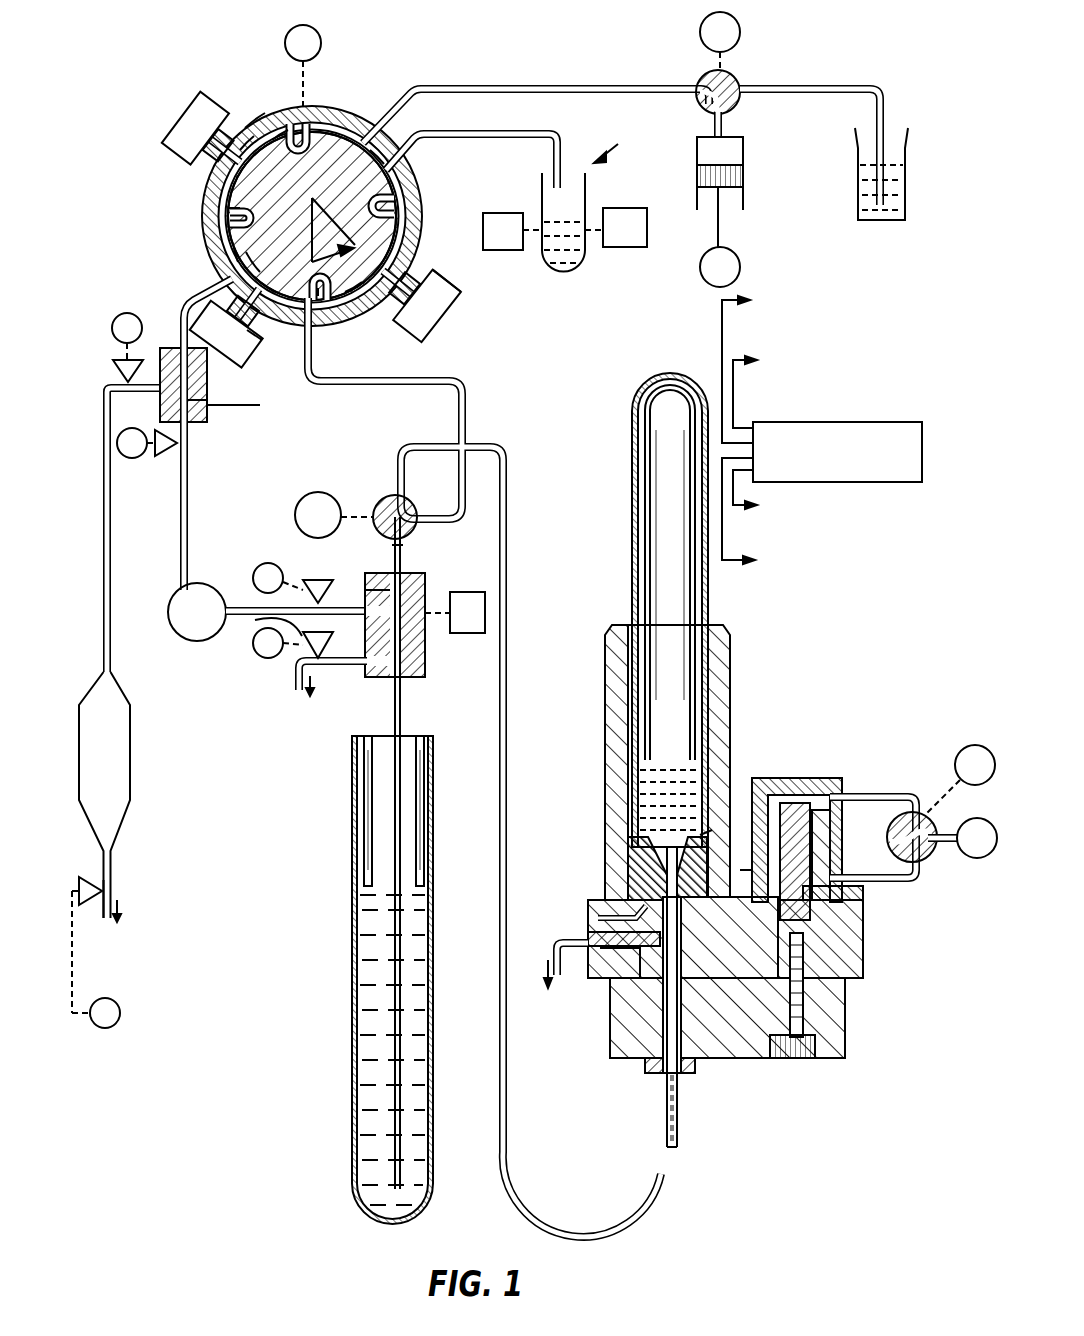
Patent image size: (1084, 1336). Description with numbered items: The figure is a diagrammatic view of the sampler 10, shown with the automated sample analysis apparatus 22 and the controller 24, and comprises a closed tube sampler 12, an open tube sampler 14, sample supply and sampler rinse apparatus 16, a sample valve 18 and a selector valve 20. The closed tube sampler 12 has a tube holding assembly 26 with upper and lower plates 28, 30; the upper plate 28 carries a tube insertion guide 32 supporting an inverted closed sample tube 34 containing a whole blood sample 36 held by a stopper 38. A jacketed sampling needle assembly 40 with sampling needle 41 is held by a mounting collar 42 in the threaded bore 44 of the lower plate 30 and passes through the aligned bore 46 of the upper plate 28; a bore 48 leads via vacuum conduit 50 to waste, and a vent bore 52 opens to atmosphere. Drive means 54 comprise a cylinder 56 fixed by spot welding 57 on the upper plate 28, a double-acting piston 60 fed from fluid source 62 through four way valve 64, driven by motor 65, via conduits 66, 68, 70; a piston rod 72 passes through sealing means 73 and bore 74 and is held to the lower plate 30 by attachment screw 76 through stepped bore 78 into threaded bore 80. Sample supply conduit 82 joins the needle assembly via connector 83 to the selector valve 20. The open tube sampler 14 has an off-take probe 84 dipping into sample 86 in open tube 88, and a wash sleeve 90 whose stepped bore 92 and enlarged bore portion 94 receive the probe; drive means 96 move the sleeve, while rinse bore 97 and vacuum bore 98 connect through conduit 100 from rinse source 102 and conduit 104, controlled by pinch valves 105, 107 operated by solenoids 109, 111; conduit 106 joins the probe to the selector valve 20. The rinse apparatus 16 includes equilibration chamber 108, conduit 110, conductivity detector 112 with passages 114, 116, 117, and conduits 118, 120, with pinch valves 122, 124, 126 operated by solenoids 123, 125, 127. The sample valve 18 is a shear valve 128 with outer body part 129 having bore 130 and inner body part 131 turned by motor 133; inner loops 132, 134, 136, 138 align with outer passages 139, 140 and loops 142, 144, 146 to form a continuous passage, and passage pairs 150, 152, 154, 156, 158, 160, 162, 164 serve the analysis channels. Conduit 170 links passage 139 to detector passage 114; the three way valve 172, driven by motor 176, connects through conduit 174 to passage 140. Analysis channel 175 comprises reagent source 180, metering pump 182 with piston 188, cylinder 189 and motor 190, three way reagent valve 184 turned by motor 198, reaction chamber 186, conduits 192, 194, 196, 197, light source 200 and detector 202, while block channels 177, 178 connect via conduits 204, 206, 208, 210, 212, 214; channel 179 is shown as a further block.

The sampler 10 is at (298, 980).
The closed tube sampler 12 is at (657, 636).
The open tube sampler 14 is at (330, 832).
The sample supply and sampler rinse apparatus 16 is at (194, 474).
The sample valve 18 is at (418, 197).
The selector valve 20 is at (421, 486).
The automated sample analysis apparatus 22 is at (590, 231).
The controller 24 is at (922, 436).
The closed sample tube holding assembly 26 is at (721, 997).
The upper plate 28 is at (864, 924).
The lower plate 30 is at (846, 1050).
The sample tube insertion guide 32 is at (731, 672).
The closed sample tube 34 is at (710, 608).
The whole blood sample 36 is at (668, 760).
The stopper 38 is at (632, 870).
The jacketed sampling needle assembly 40 is at (660, 995).
The sampling needle 41 is at (704, 832).
The screw-threaded mounting collar 42 is at (676, 1070).
The stepped and internally threaded bore 44 is at (690, 1060).
The aligned bore 46 is at (590, 928).
The bore 48 is at (606, 952).
The vacuum conduit 50 is at (556, 950).
The vent bore 52 is at (596, 912).
The closed tube holding assembly drive means 54 is at (776, 778).
The cylinder 56 is at (805, 818).
The spot welding 57 is at (745, 880).
The double-acting piston 60 is at (800, 806).
The pressurized fluid source 62 is at (972, 855).
The four way valve 64 is at (900, 809).
The electric drive motor 65 is at (968, 746).
The conduit 66 is at (942, 830).
The conduit 68 is at (892, 796).
The conduit 70 is at (898, 852).
The piston rod 72 is at (832, 826).
The sealing means 73 is at (830, 893).
The bore 74 is at (866, 905).
The attachment screw 76 is at (804, 1016).
The stepped bore 78 is at (810, 1060).
The threaded bore 80 is at (804, 936).
The flexible sample supply conduit 82 is at (475, 767).
The sampling needle connector 83 is at (666, 1092).
The off-take probe 84 is at (402, 712).
The sample 86 is at (362, 886).
The open sample tube 88 is at (360, 980).
The probe wash sleeve 90 is at (412, 578).
The stepped bore 92 is at (388, 590).
The enlarged bore portion 94 is at (420, 640).
The wash sleeve drive means 96 is at (470, 592).
The rinse solution bore 97 is at (372, 595).
The vacuum bore 98 is at (372, 670).
The flexible rinse conduit 100 is at (232, 604).
The pressurized rinse solution source 102 is at (194, 642).
The flexible vacuum conduit 104 is at (334, 648).
The pinch valve 105 is at (304, 576).
The flexible sample supply conduit 106 is at (402, 545).
The pinch valve 107 is at (264, 623).
The pressure equilibration chamber 108 is at (132, 750).
The solenoid 109 is at (268, 562).
The flexible conduit 110 is at (112, 880).
The solenoid 111 is at (264, 656).
The conductivity detector 112 is at (262, 408).
The flow passage 114 is at (196, 380).
The flow passage 116 is at (162, 400).
The flow passage 117 is at (200, 412).
The flexible conduit 118 is at (110, 530).
The flexible conduit 120 is at (190, 532).
The pinch valve 122 is at (84, 880).
The solenoid 123 is at (120, 1012).
The pinch valve 124 is at (112, 366).
The solenoid 125 is at (118, 312).
The pinch valve 126 is at (162, 458).
The solenoid 127 is at (131, 458).
The shear valve 128 is at (318, 100).
The outer valve body part 129 is at (402, 218).
The bore 130 is at (236, 226).
The inner valve body part 131 is at (304, 372).
The sample fluid loop 132 is at (228, 210).
The electric drive motor 133 is at (318, 36).
The sample fluid loop 134 is at (300, 122).
The sample fluid loop 136 is at (392, 206).
The sample fluid loop 138 is at (324, 304).
The sample fluid passage 139 is at (246, 258).
The sample fluid passage 140 is at (319, 306).
The sample fluid loop 142 is at (280, 134).
The sample fluid loop 144 is at (404, 136).
The sample fluid loop 146 is at (392, 238).
The fluid passage 150 is at (252, 306).
The fluid passage 152 is at (290, 240).
The fluid passage 154 is at (226, 166).
The fluid passage 156 is at (256, 118).
The fluid passage 158 is at (395, 100).
The fluid passage 160 is at (386, 158).
The fluid passage 162 is at (403, 284).
The fluid passage 164 is at (352, 296).
The flexible conduit 170 is at (236, 266).
The three way valve 172 is at (410, 494).
The flexible conduit 174 is at (452, 380).
The sample analysis channel 175 is at (619, 140).
The electric drive motor 176 is at (310, 500).
The sample analysis channel 177 is at (228, 350).
The sample analysis channel 178 is at (445, 312).
The sample analysis channel 179 is at (178, 126).
The reagent source 180 is at (908, 140).
The reagent metering pump 182 is at (730, 192).
The three way reagent valve 184 is at (740, 80).
The sample-reagent reaction and analysis chamber 186 is at (587, 192).
The piston 188 is at (744, 172).
The cylinder 189 is at (700, 150).
The electric drive motor 190 is at (736, 256).
The flexible conduit 192 is at (850, 76).
The flexible conduit 194 is at (536, 99).
The flexible conduit 196 is at (481, 139).
The flexible conduit 197 is at (724, 120).
The electric drive motor 198 is at (742, 32).
The light source 200 is at (510, 246).
The light-sensitive detector 202 is at (647, 230).
The flexible conduit 204 is at (246, 142).
The flexible conduit 206 is at (205, 150).
The flexible conduit 208 is at (228, 308).
The flexible conduit 210 is at (258, 342).
The flexible conduit 212 is at (404, 306).
The flexible conduit 214 is at (452, 286).